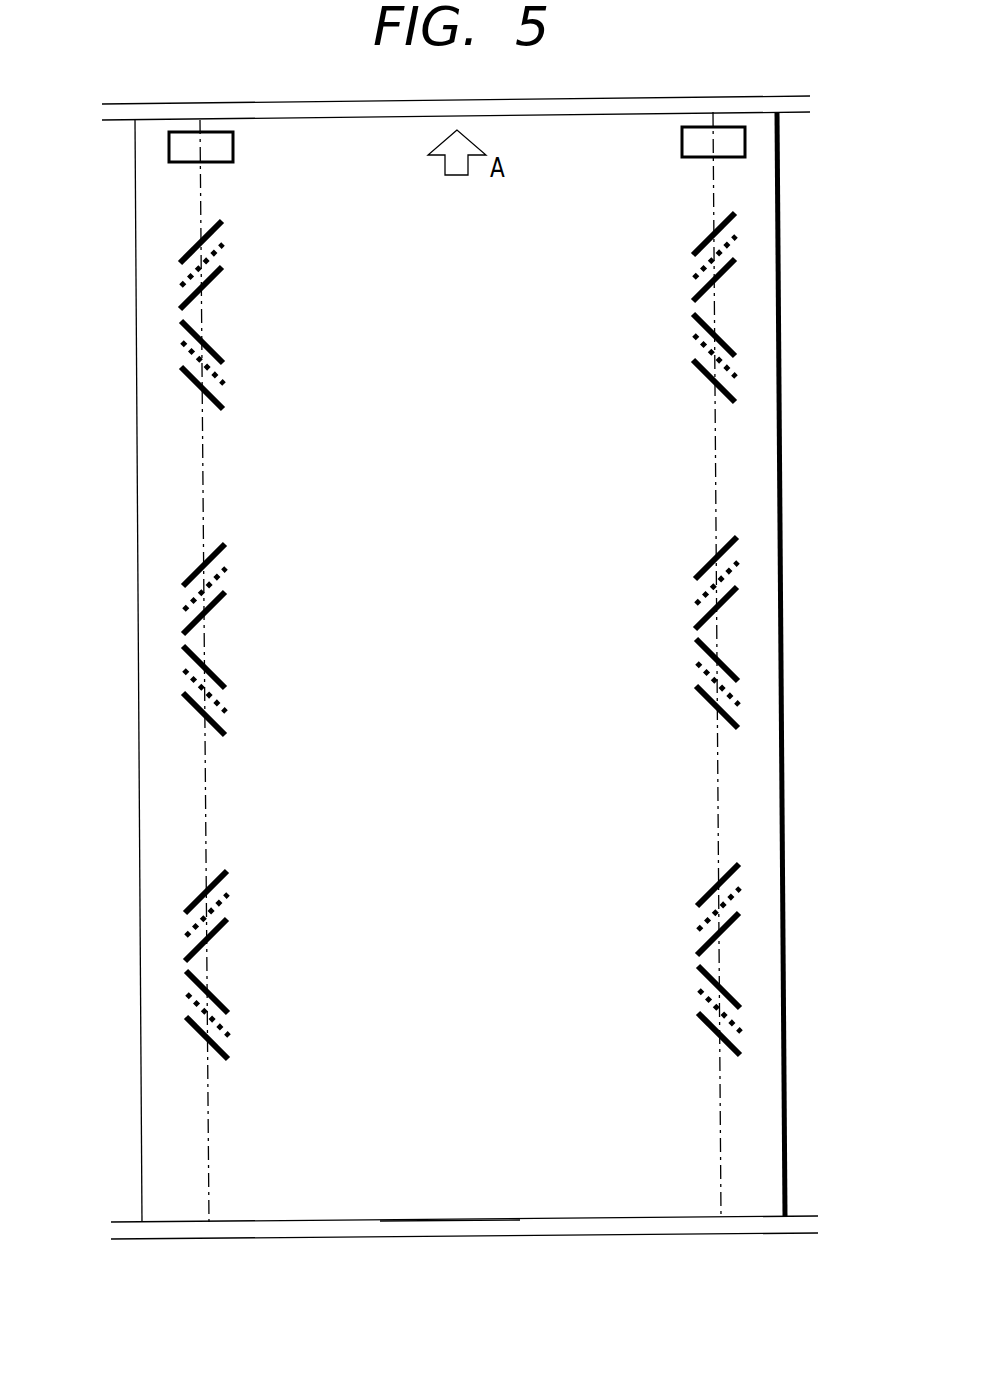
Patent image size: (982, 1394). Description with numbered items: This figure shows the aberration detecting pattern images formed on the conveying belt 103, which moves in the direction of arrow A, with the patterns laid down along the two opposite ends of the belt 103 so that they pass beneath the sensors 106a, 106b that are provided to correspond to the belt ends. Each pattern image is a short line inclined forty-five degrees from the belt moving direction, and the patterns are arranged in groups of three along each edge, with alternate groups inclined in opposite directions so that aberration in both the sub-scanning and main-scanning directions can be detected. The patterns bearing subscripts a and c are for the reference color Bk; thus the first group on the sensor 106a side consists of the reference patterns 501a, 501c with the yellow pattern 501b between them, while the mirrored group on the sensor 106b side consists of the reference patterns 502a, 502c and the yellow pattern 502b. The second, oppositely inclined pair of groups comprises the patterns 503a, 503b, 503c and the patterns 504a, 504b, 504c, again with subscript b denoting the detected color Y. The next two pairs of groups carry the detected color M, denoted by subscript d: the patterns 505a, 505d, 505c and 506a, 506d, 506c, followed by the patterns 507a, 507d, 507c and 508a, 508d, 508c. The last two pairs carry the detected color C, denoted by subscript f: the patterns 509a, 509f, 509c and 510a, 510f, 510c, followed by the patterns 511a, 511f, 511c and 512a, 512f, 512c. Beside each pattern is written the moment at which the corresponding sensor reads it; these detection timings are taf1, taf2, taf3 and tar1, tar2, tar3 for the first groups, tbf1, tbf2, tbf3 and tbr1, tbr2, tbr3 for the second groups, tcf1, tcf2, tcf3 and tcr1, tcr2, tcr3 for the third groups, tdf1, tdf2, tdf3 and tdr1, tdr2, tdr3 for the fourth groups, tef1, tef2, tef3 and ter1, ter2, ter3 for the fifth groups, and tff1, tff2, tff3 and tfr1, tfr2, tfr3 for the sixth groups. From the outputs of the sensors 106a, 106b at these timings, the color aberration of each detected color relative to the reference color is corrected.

The sensor 106a is at (169, 150).
The sensor 106b is at (746, 142).
The conveying belt 103 is at (447, 1198).
The pattern image 501a is at (185, 242).
The pattern image 501b is at (185, 265).
The pattern image 501c is at (185, 288).
The pattern image 502a is at (727, 227).
The pattern image 502b is at (727, 250).
The pattern image 502c is at (727, 273).
The pattern image 503a is at (185, 342).
The pattern image 503b is at (185, 363).
The pattern image 503c is at (185, 388).
The pattern image 504a is at (727, 328).
The pattern image 504b is at (727, 349).
The pattern image 504c is at (727, 374).
The pattern image 505a is at (185, 565).
The pattern image 505d is at (185, 589).
The pattern image 505c is at (185, 613).
The pattern image 506a is at (729, 551).
The pattern image 506d is at (729, 576).
The pattern image 506c is at (729, 601).
The pattern image 507a is at (185, 667).
The pattern image 507d is at (185, 691).
The pattern image 507c is at (185, 714).
The pattern image 508a is at (730, 653).
The pattern image 508d is at (730, 677).
The pattern image 508c is at (730, 700).
The pattern image 509a is at (185, 892).
The pattern image 509f is at (185, 915).
The pattern image 509c is at (185, 940).
The pattern image 510a is at (731, 877).
The pattern image 510f is at (731, 901).
The pattern image 510c is at (731, 926).
The pattern image 511a is at (185, 992).
The pattern image 511f is at (185, 1015).
The pattern image 511c is at (185, 1038).
The pattern image 512a is at (732, 980).
The pattern image 512f is at (732, 1004).
The pattern image 512c is at (732, 1027).
The detection timing taf1 is at (207, 242).
The detection timing taf2 is at (207, 265).
The detection timing taf3 is at (207, 288).
The detection timing tbf1 is at (208, 342).
The detection timing tbf2 is at (208, 363).
The detection timing tbf3 is at (208, 388).
The detection timing tcf1 is at (210, 565).
The detection timing tcf2 is at (210, 589).
The detection timing tcf3 is at (210, 613).
The detection timing tdf1 is at (210, 667).
The detection timing tdf2 is at (210, 691).
The detection timing tdf3 is at (210, 714).
The detection timing tef1 is at (212, 892).
The detection timing tef2 is at (212, 915).
The detection timing tef3 is at (212, 940).
The detection timing tff1 is at (213, 992).
The detection timing tff2 is at (213, 1015).
The detection timing tff3 is at (213, 1038).
The detection timing tar1 is at (709, 234).
The detection timing tar2 is at (709, 257).
The detection timing tar3 is at (709, 280).
The detection timing tbr1 is at (709, 335).
The detection timing tbr2 is at (709, 356).
The detection timing tbr3 is at (709, 381).
The detection timing tcr1 is at (711, 558).
The detection timing tcr2 is at (711, 583).
The detection timing tcr3 is at (711, 608).
The detection timing tdr1 is at (712, 660).
The detection timing tdr2 is at (712, 684).
The detection timing tdr3 is at (712, 707).
The detection timing ter1 is at (713, 885).
The detection timing ter2 is at (713, 909).
The detection timing ter3 is at (713, 934).
The detection timing tfr1 is at (714, 987).
The detection timing tfr2 is at (714, 1011).
The detection timing tfr3 is at (714, 1034).